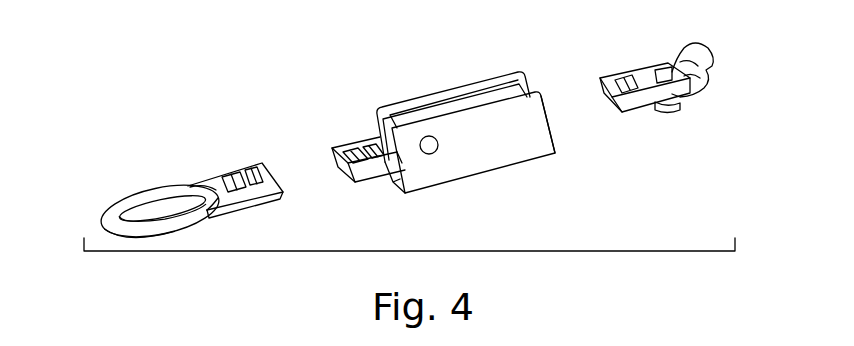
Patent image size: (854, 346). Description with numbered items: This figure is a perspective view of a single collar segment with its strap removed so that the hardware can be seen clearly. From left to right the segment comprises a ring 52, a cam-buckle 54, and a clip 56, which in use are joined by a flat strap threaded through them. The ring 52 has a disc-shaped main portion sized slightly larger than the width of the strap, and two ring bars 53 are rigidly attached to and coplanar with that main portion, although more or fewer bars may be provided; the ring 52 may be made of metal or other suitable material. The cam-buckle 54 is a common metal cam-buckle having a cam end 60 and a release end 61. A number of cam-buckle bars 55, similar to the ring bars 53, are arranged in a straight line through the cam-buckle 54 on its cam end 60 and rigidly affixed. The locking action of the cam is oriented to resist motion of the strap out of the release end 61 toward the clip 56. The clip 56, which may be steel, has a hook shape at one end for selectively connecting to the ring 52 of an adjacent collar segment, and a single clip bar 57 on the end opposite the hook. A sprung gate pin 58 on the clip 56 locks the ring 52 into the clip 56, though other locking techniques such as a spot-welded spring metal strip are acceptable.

The ring 52 is at (108, 208).
The ring bars 53 is at (267, 172).
The cam-buckle 54 is at (478, 150).
The cam-buckle bars 55 is at (372, 150).
The clip 56 is at (650, 88).
The clip bar 57 is at (622, 92).
The sprung gate pin 58 is at (657, 67).
The cam end 60 is at (400, 188).
The release end 61 is at (557, 142).